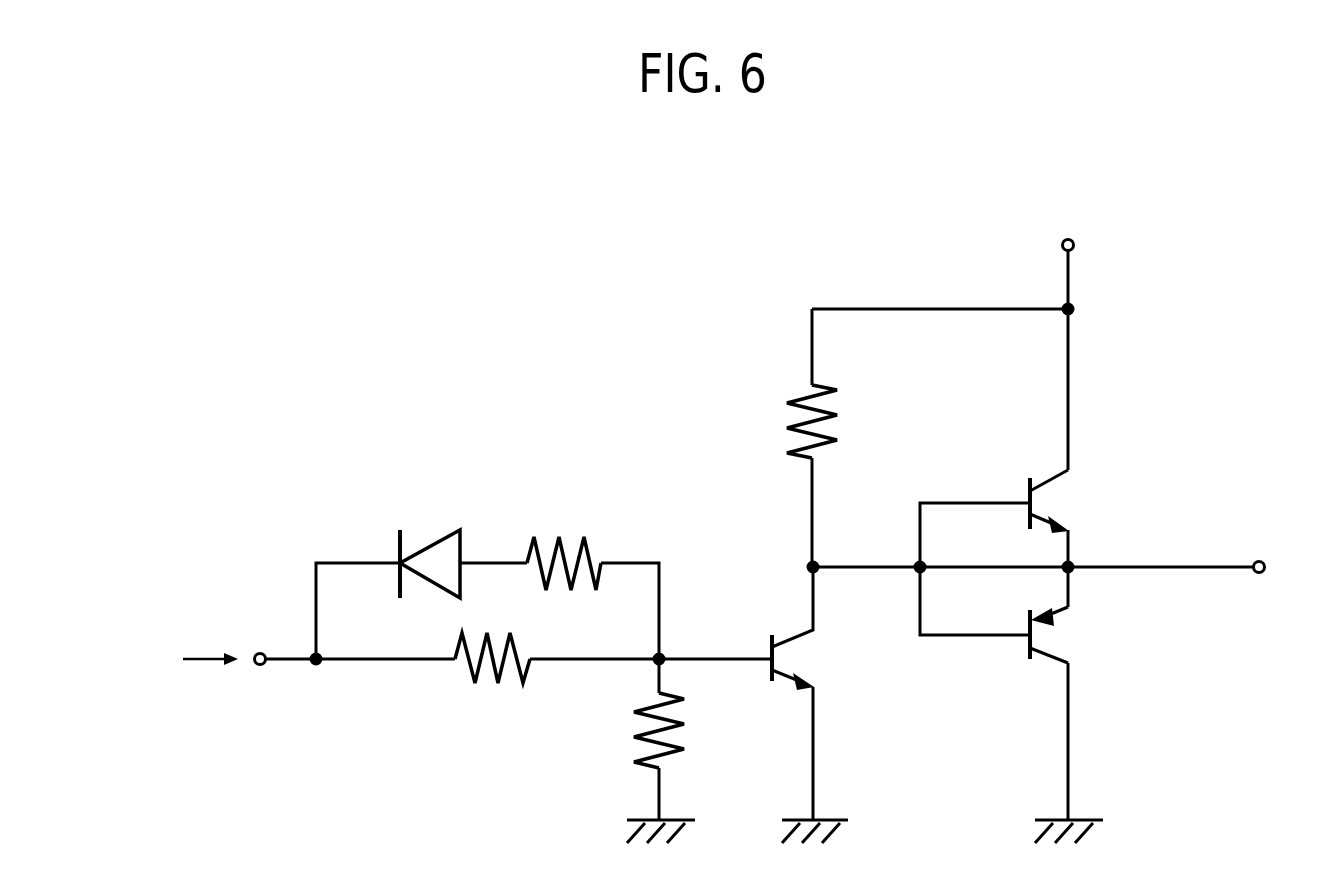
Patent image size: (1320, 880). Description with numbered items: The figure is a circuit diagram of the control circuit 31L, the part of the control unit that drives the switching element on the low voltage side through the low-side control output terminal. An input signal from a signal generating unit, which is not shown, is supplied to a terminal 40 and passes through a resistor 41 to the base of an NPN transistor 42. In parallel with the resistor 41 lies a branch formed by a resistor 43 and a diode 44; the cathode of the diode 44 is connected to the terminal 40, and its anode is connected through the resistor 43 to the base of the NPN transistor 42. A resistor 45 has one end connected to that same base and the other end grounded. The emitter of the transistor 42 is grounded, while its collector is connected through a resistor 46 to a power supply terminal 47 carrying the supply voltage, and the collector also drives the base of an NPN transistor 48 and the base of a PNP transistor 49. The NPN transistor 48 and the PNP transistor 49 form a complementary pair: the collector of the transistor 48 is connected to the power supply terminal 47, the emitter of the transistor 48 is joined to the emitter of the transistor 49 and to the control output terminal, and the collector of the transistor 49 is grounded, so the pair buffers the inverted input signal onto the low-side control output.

The control circuit 31L is at (480, 335).
The terminal 40 is at (260, 652).
The resistor 41 is at (487, 640).
The NPN transistor 42 is at (770, 638).
The resistor 43 is at (553, 543).
The diode 44 is at (415, 557).
The resistor 45 is at (682, 724).
The resistor 46 is at (790, 426).
The power supply terminal 47 is at (1077, 246).
The NPN transistor 48 is at (1055, 478).
The PNP transistor 49 is at (1054, 652).